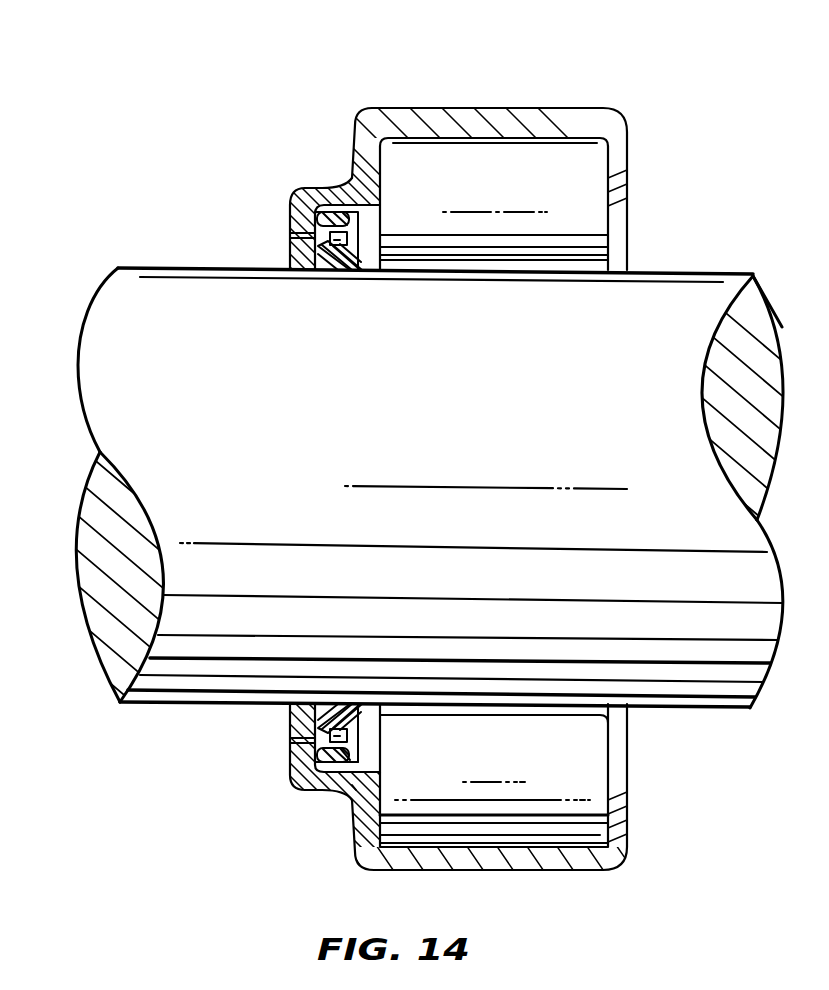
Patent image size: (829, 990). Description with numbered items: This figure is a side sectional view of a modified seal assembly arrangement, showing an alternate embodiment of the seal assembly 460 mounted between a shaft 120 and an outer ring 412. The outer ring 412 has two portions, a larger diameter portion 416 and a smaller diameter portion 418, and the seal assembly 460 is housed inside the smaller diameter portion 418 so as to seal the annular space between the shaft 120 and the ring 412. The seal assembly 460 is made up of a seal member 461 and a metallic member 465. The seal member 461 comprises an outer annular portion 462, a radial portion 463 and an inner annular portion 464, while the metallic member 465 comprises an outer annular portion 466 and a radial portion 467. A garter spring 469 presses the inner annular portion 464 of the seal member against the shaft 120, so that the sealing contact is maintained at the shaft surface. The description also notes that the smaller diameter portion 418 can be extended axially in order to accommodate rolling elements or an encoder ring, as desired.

The shaft 120 is at (584, 413).
The outer ring 412 is at (410, 466).
The larger diameter portion 416 is at (617, 112).
The smaller diameter portion 418 is at (325, 190).
The seal assembly 460 is at (376, 220).
The seal member 461 is at (332, 712).
The outer annular portion 462 is at (350, 782).
The radial portion 463 is at (347, 760).
The inner annular portion 464 is at (330, 235).
The metallic member 465 is at (300, 250).
The outer annular portion 466 is at (312, 205).
The radial portion 467 is at (326, 212).
The garter spring 469 is at (352, 240).